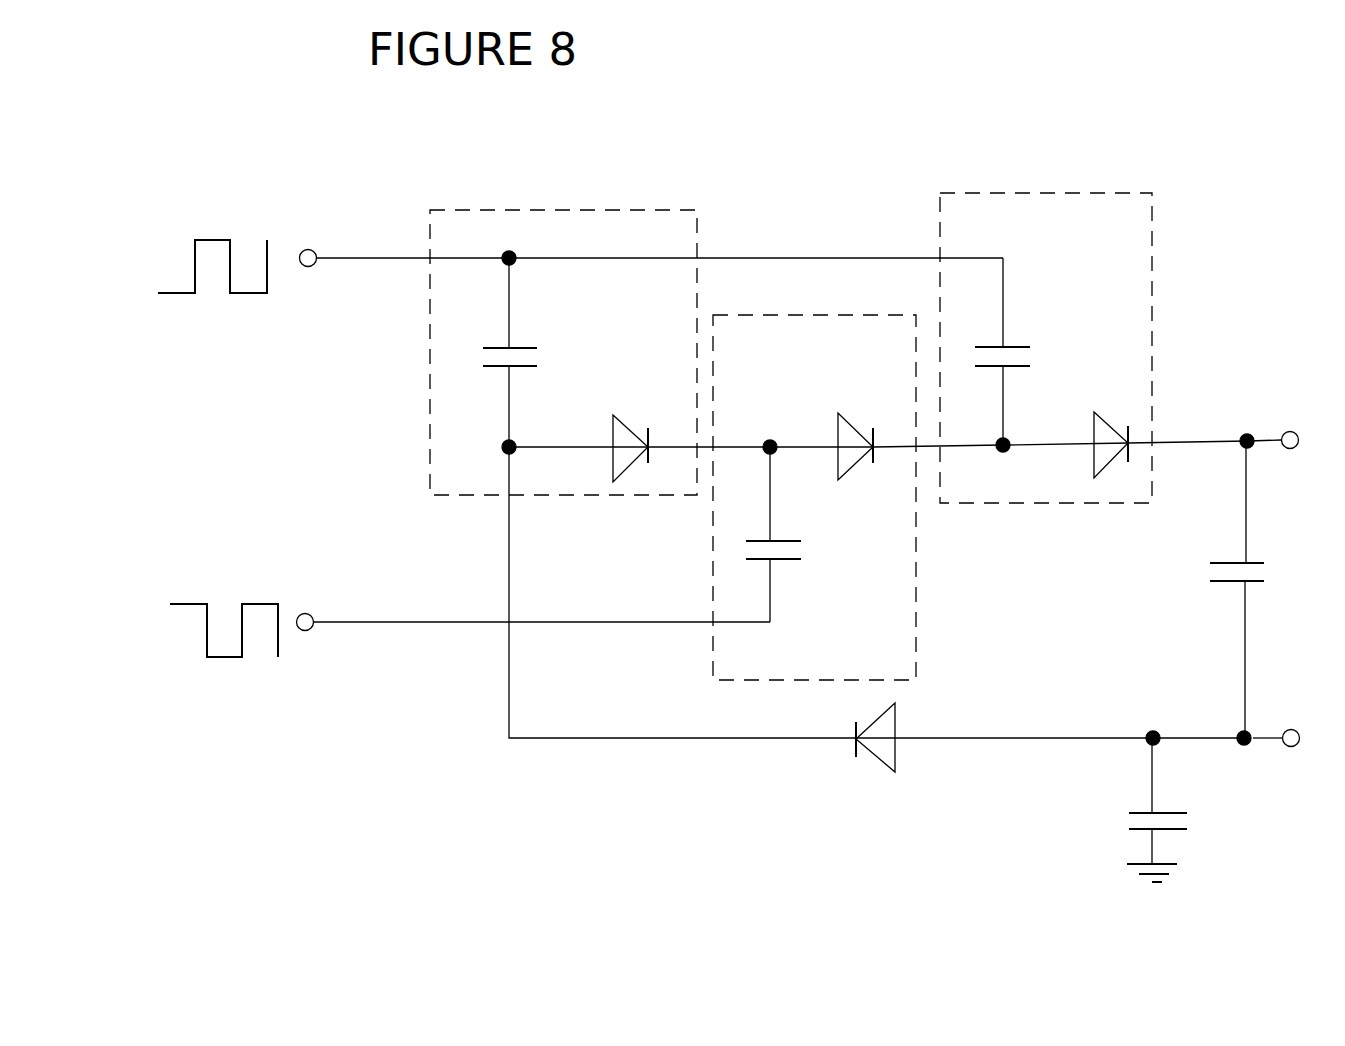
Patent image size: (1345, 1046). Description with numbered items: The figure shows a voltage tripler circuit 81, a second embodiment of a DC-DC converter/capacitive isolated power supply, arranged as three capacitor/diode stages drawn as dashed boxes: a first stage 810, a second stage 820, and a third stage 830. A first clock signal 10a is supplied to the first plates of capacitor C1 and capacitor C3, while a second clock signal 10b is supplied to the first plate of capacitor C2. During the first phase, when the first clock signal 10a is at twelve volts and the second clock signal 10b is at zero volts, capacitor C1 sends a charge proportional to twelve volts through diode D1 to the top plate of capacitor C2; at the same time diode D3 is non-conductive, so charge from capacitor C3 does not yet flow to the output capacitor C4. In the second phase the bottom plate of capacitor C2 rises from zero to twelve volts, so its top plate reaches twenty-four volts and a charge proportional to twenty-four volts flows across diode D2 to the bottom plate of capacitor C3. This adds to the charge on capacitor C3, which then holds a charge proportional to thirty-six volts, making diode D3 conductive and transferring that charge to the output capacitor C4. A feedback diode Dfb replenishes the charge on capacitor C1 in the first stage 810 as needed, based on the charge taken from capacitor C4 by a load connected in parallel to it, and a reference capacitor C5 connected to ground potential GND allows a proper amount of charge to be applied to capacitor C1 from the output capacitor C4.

The voltage tripler circuit 81 is at (814, 460).
The first stage 810 is at (563, 319).
The second stage 820 is at (814, 469).
The third stage 830 is at (1046, 321).
The first clock signal 10a is at (195, 240).
The second clock signal 10b is at (198, 603).
The capacitor C1 is at (497, 312).
The capacitor C2 is at (759, 534).
The capacitor C3 is at (989, 351).
The output capacitor C4 is at (1218, 589).
The reference capacitor C5 is at (1142, 801).
The diode D1 is at (613, 413).
The diode D2 is at (840, 411).
The diode D3 is at (1095, 408).
The feedback diode Dfb is at (902, 768).
The ground potential GND is at (1190, 846).